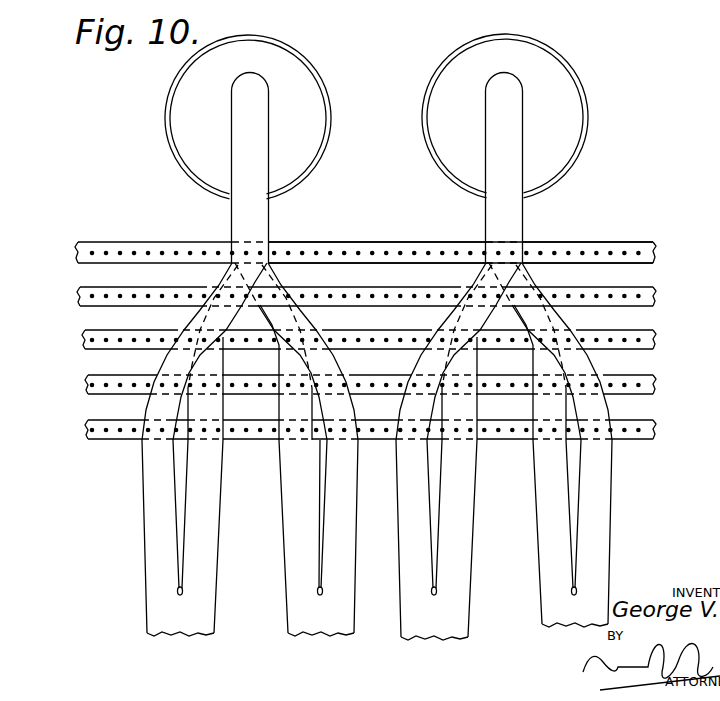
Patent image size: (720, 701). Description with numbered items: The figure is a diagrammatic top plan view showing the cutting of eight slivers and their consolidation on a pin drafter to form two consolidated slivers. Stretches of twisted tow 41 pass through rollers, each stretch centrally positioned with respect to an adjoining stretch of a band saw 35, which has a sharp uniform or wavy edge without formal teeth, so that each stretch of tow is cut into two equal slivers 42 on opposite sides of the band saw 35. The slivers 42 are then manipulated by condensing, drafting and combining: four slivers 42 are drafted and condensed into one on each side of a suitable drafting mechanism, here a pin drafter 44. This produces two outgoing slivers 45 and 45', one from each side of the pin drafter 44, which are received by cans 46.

The band saw 35 is at (182, 586).
The stretch of twisted tow 41 is at (168, 632).
The sliver 42 is at (152, 540).
The pin drafter 44 is at (660, 321).
The outgoing sliver 45 is at (274, 168).
The outgoing sliver 45' is at (532, 168).
The can 46 is at (317, 73).